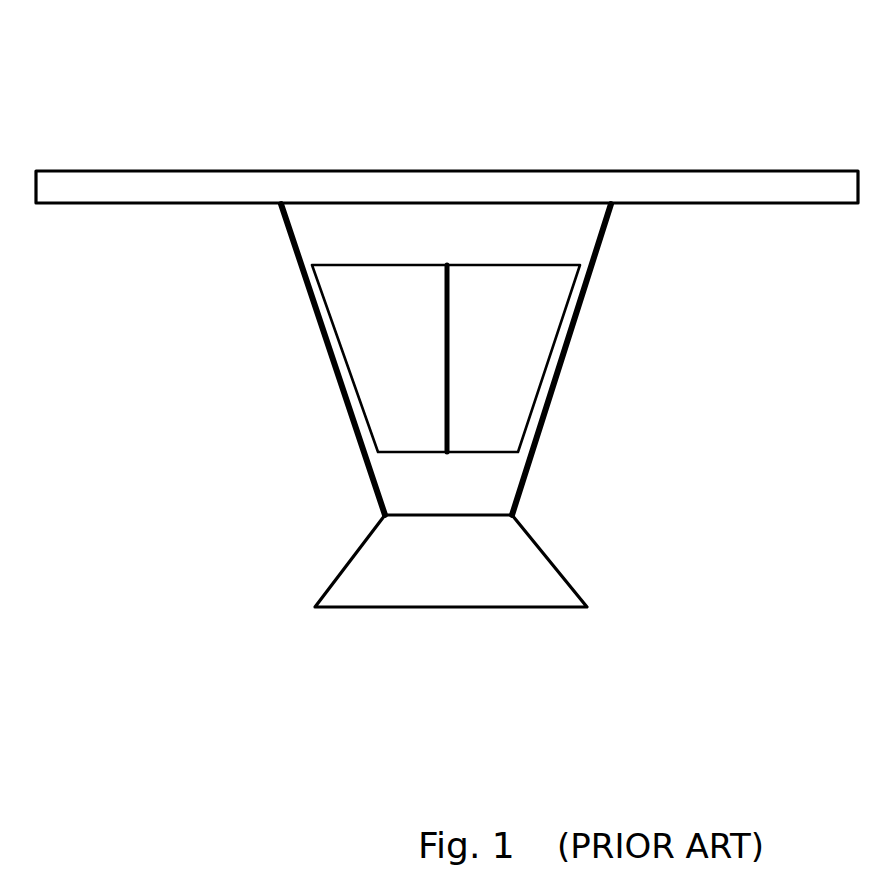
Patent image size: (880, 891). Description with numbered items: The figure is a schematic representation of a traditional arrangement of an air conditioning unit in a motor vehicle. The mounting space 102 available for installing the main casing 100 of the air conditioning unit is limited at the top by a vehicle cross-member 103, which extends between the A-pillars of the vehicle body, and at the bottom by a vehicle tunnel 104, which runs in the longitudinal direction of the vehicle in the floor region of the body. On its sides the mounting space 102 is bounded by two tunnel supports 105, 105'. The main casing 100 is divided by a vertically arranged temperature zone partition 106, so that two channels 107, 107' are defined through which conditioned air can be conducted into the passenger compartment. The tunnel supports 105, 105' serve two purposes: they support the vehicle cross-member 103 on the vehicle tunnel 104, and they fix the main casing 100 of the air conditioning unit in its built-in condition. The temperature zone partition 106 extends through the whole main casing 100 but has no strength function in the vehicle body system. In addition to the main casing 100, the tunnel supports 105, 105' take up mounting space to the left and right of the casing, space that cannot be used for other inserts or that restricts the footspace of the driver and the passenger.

The main casing 100 is at (517, 440).
The mounting space 102 is at (368, 235).
The vehicle cross-member 103 is at (643, 170).
The vehicle tunnel 104 is at (550, 560).
The tunnel support 105 is at (674, 359).
The tunnel support 105' is at (245, 359).
The temperature zone partition 106 is at (447, 422).
The channel 107 is at (675, 368).
The channel 107' is at (213, 324).